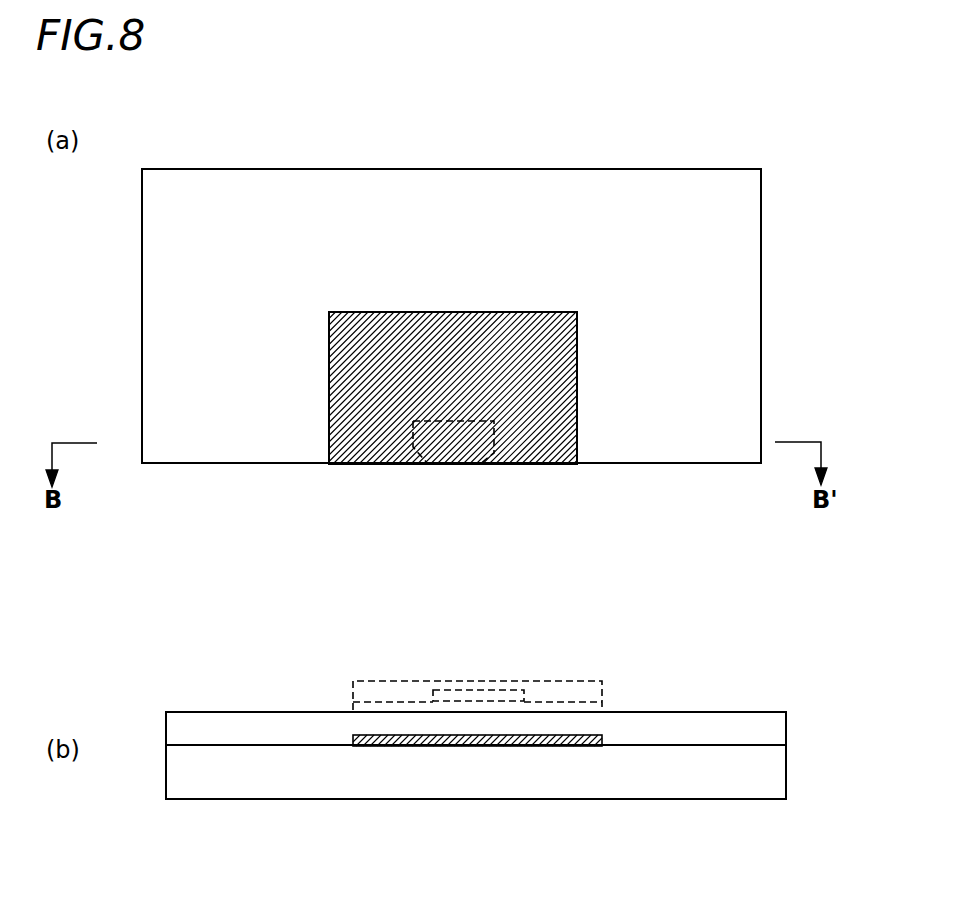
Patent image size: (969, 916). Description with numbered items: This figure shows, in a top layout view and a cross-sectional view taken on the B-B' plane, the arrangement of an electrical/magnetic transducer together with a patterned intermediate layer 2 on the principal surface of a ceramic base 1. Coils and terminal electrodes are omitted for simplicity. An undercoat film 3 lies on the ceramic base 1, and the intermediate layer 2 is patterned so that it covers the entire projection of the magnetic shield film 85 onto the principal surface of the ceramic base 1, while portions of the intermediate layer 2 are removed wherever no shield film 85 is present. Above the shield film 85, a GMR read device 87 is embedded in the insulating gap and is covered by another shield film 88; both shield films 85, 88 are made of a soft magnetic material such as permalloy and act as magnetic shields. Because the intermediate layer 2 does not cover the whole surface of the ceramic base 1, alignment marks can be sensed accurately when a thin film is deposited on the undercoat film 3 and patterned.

The ceramic base 1 is at (761, 246).
The intermediate layer 2 is at (328, 391).
The undercoat film 3 is at (786, 733).
The shield film 85 is at (607, 707).
The GMR read device 87 is at (503, 467).
The shield film 88 is at (377, 682).